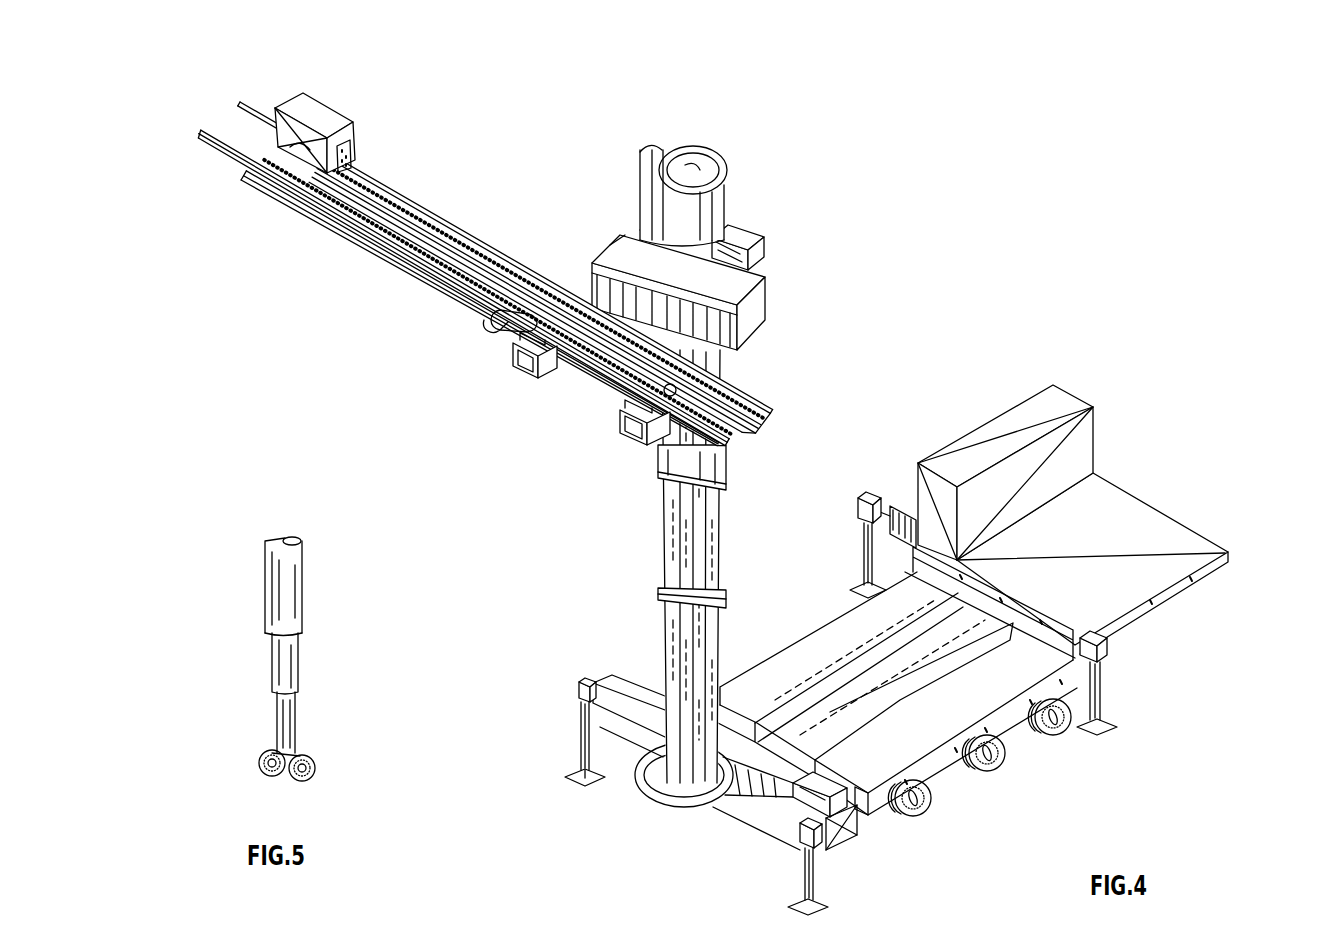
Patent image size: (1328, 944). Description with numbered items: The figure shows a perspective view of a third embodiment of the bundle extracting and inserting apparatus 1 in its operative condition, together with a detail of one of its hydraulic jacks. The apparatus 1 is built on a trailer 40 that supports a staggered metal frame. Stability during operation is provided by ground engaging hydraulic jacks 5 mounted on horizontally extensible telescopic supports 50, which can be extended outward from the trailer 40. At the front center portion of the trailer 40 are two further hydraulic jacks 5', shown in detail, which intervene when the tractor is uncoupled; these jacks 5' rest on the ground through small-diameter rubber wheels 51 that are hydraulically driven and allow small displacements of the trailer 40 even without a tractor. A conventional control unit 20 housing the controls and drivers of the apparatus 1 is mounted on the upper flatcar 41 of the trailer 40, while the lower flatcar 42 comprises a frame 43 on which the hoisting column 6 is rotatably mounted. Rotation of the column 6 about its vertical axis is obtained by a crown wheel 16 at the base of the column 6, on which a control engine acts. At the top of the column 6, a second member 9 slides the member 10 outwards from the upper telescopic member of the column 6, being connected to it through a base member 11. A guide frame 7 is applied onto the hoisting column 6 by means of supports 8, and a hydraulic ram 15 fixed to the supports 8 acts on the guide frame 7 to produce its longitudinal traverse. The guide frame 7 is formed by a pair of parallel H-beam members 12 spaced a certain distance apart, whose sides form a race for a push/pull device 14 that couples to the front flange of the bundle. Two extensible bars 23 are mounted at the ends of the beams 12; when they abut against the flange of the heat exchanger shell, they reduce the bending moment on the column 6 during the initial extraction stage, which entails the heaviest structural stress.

In FIG. 4, the apparatus 1 is at (952, 180).
In FIG. 4, the hydraulic jack 5 is at (815, 665).
In FIG. 5, the hydraulic jack 5' is at (317, 645).
In FIG. 4, the hoisting column 6 is at (658, 578).
In FIG. 4, the guide frame 7 is at (489, 256).
In FIG. 4, the supports 8 is at (620, 426).
In FIG. 4, the second member 9 is at (650, 200).
In FIG. 4, the member 10 is at (760, 312).
In FIG. 4, the base member 11 is at (680, 470).
In FIG. 4, the members 12 is at (404, 194).
In FIG. 4, the push/pull device 14 is at (322, 112).
In FIG. 4, the hydraulic ram 15 is at (688, 358).
In FIG. 4, the crown wheel 16 is at (660, 717).
In FIG. 4, the control unit 20 is at (1071, 402).
In FIG. 4, the extensible bars 23 is at (238, 106).
In FIG. 4, the trailer 40 is at (1245, 528).
In FIG. 4, the upper flatcar 41 is at (1177, 588).
In FIG. 4, the lower flatcar 42 is at (858, 668).
In FIG. 4, the frame 43 is at (773, 824).
In FIG. 4, the telescopic supports 50 is at (903, 505).
In FIG. 5, the rubber wheels 51 is at (312, 752).